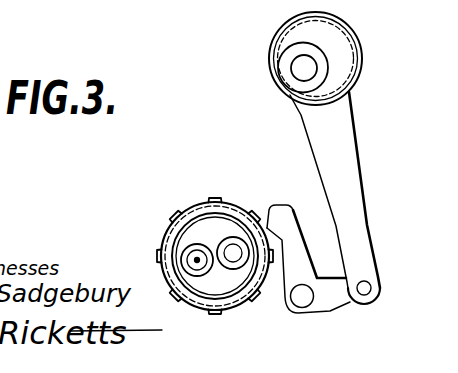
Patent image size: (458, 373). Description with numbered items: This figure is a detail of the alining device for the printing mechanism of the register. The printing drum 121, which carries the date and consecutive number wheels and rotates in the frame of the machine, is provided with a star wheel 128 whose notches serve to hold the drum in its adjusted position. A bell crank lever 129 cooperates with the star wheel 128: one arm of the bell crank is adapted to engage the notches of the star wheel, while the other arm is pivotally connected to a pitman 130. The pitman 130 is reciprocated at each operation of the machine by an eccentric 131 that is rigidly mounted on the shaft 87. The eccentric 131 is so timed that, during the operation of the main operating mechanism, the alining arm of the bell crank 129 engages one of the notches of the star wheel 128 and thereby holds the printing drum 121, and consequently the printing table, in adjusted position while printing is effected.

The shaft 87 is at (303, 67).
The printing drum 121 is at (237, 207).
The star wheel 128 is at (220, 181).
The bell crank lever 129 is at (333, 300).
The pitman 130 is at (351, 160).
The eccentric 131 is at (339, 43).